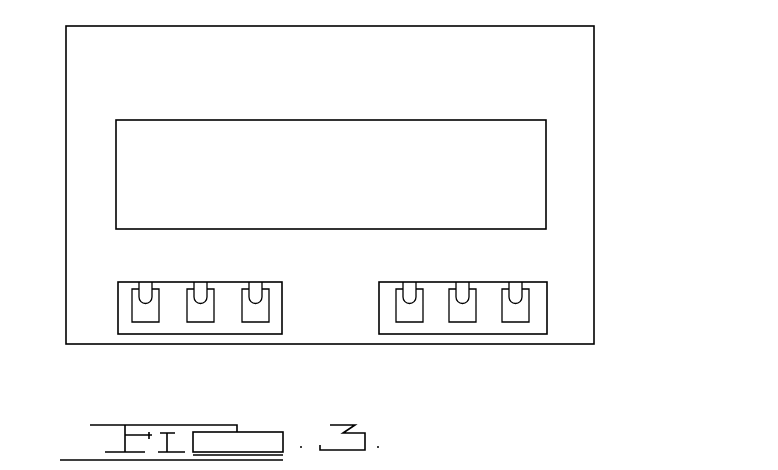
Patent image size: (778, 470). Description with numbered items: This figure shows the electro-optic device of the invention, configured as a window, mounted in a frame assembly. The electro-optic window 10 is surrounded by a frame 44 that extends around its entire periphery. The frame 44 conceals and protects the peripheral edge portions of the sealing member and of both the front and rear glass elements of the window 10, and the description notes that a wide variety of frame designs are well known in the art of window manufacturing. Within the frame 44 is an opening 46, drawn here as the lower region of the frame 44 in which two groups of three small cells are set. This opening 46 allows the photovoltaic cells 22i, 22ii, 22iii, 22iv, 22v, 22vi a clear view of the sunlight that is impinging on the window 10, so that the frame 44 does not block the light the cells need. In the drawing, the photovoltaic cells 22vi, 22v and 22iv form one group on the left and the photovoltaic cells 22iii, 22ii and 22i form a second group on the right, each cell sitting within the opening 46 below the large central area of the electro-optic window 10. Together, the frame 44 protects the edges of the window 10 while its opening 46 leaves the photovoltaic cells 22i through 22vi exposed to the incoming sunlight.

The electro-optic window 10 is at (312, 186).
The frame 44 is at (588, 78).
The opening 46 is at (537, 313).
The photovoltaic cell 22i is at (518, 313).
The photovoltaic cell 22ii is at (467, 313).
The photovoltaic cell 22iii is at (402, 313).
The photovoltaic cell 22iv is at (257, 316).
The photovoltaic cell 22v is at (198, 316).
The photovoltaic cell 22vi is at (140, 316).